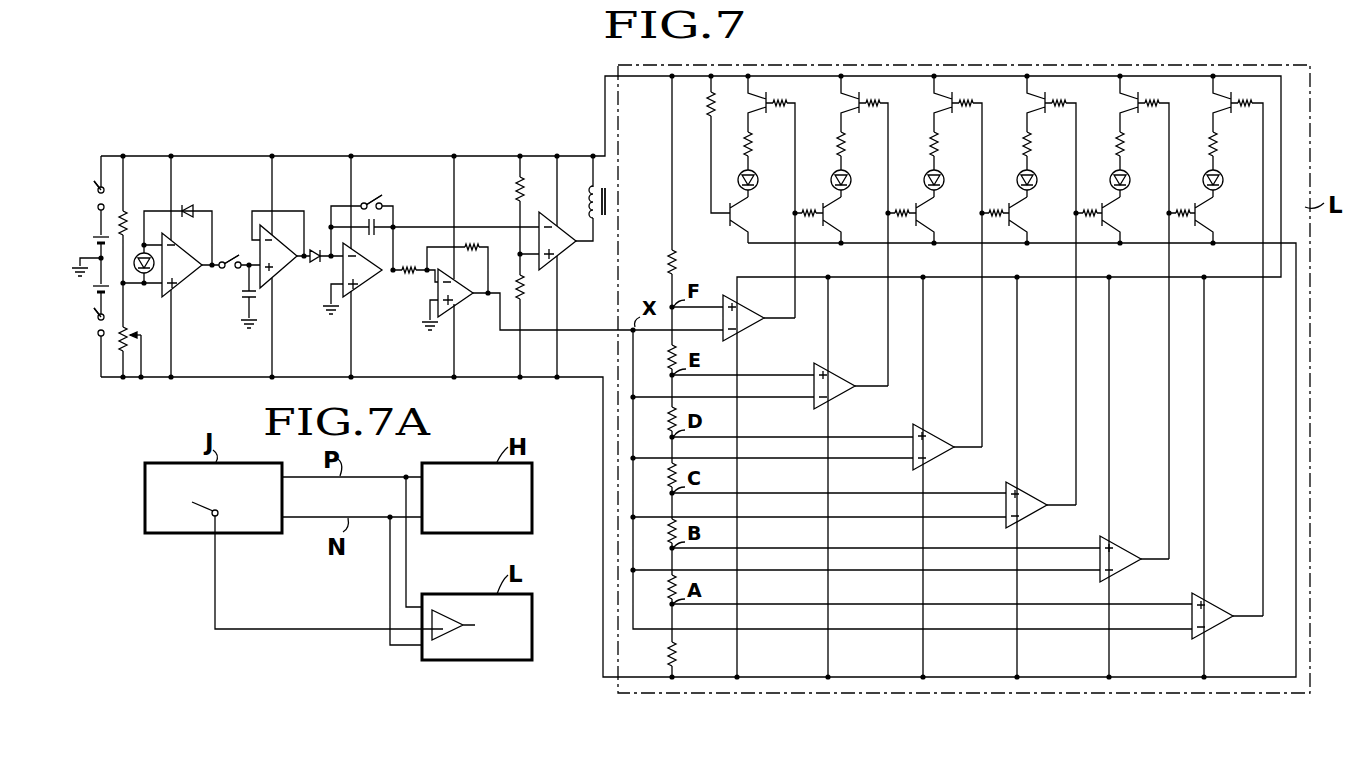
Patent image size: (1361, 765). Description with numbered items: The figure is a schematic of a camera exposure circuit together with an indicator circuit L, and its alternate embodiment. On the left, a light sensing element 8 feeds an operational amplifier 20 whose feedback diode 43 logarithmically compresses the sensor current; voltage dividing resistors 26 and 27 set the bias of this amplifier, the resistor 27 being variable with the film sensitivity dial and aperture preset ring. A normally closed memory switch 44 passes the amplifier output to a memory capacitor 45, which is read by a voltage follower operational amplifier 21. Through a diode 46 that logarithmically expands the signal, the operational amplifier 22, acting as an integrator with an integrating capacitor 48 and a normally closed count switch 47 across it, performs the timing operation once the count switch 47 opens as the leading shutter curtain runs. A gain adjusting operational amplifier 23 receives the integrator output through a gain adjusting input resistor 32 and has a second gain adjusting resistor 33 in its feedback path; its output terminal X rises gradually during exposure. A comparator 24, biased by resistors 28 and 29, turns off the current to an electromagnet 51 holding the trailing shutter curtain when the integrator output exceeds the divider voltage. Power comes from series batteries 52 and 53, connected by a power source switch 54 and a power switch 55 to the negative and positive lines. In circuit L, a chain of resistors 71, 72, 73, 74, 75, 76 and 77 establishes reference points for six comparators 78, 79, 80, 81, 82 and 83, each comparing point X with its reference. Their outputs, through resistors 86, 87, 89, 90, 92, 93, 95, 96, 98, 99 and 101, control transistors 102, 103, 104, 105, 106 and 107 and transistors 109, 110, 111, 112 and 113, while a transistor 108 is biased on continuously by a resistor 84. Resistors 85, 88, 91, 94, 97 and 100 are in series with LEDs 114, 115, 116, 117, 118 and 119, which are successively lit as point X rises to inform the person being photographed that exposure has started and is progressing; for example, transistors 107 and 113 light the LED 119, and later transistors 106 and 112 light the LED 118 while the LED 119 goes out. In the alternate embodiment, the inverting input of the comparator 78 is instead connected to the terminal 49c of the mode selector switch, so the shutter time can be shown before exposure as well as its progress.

In FIG. 7, the light sensing element 8 is at (143, 275).
In FIG. 7, the operational amplifier 20 is at (190, 287).
In FIG. 7, the operational amplifier 21 is at (286, 276).
In FIG. 7, the operational amplifier 22 is at (368, 287).
In FIG. 7, the gain adjusting operational amplifier 23 is at (462, 305).
In FIG. 7, the comparator 24 is at (563, 258).
In FIG. 7, the voltage dividing resistor 26 is at (127, 215).
In FIG. 7, the voltage dividing resistor 27 is at (138, 335).
In FIG. 7, the resistor 28 is at (524, 192).
In FIG. 7, the resistor 29 is at (524, 292).
In FIG. 7, the gain adjusting input resistor 32 is at (409, 276).
In FIG. 7, the gain adjusting resistor 33 is at (471, 251).
In FIG. 7, the diode 43 is at (195, 208).
In FIG. 7, the memory switch 44 is at (233, 255).
In FIG. 7, the memory capacitor 45 is at (244, 300).
In FIG. 7, the diode 46 is at (316, 249).
In FIG. 7, the count switch 47 is at (367, 200).
In FIG. 7, the integrating capacitor 48 is at (373, 237).
In FIG. 7A, the common terminal of mode selector switch 49c is at (218, 510).
In FIG. 7, the electromagnet 51 is at (599, 220).
In FIG. 7, the battery 52 is at (93, 290).
In FIG. 7, the battery 53 is at (93, 241).
In FIG. 7, the power source switch 54 is at (97, 330).
In FIG. 7, the power switch 55 is at (97, 200).
In FIG. 7, the resistor 71 is at (668, 262).
In FIG. 7, the resistor 72 is at (668, 360).
In FIG. 7, the resistor 73 is at (667, 425).
In FIG. 7, the resistor 74 is at (667, 480).
In FIG. 7, the resistor 75 is at (667, 535).
In FIG. 7, the resistor 76 is at (667, 590).
In FIG. 7, the resistor 77 is at (667, 655).
In FIG. 7, the comparator 78 is at (754, 334).
In FIG. 7A, the comparator 78 is at (437, 612).
In FIG. 7, the comparator 79 is at (845, 401).
In FIG. 7, the comparator 80 is at (944, 462).
In FIG. 7, the comparator 81 is at (1037, 520).
In FIG. 7, the comparator 82 is at (1131, 574).
In FIG. 7, the comparator 83 is at (1223, 631).
In FIG. 7, the resistor 84 is at (709, 112).
In FIG. 7, the resistor 85 is at (745, 138).
In FIG. 7, the resistor 86 is at (780, 108).
In FIG. 7, the resistor 87 is at (809, 208).
In FIG. 7, the resistor 88 is at (838, 138).
In FIG. 7, the resistor 89 is at (873, 108).
In FIG. 7, the resistor 90 is at (902, 208).
In FIG. 7, the resistor 91 is at (931, 138).
In FIG. 7, the resistor 92 is at (966, 108).
In FIG. 7, the resistor 93 is at (996, 208).
In FIG. 7, the resistor 94 is at (1024, 138).
In FIG. 7, the resistor 95 is at (1059, 108).
In FIG. 7, the resistor 96 is at (1090, 208).
In FIG. 7, the resistor 97 is at (1117, 138).
In FIG. 7, the resistor 98 is at (1152, 108).
In FIG. 7, the resistor 99 is at (1183, 208).
In FIG. 7, the resistor 100 is at (1210, 138).
In FIG. 7, the resistor 101 is at (1245, 108).
In FIG. 7, the transistor 102 is at (766, 94).
In FIG. 7, the transistor 103 is at (859, 94).
In FIG. 7, the transistor 104 is at (952, 94).
In FIG. 7, the transistor 105 is at (1045, 94).
In FIG. 7, the transistor 106 is at (1138, 94).
In FIG. 7, the transistor 107 is at (1231, 94).
In FIG. 7, the transistor 108 is at (731, 226).
In FIG. 7, the transistor 109 is at (824, 226).
In FIG. 7, the transistor 110 is at (917, 226).
In FIG. 7, the transistor 111 is at (1010, 226).
In FIG. 7, the transistor 112 is at (1103, 226).
In FIG. 7, the transistor 113 is at (1196, 226).
In FIG. 7, the LED 114 is at (755, 187).
In FIG. 7, the LED 115 is at (848, 187).
In FIG. 7, the LED 116 is at (941, 187).
In FIG. 7, the LED 117 is at (1034, 187).
In FIG. 7, the LED 118 is at (1127, 187).
In FIG. 7, the LED 119 is at (1220, 187).